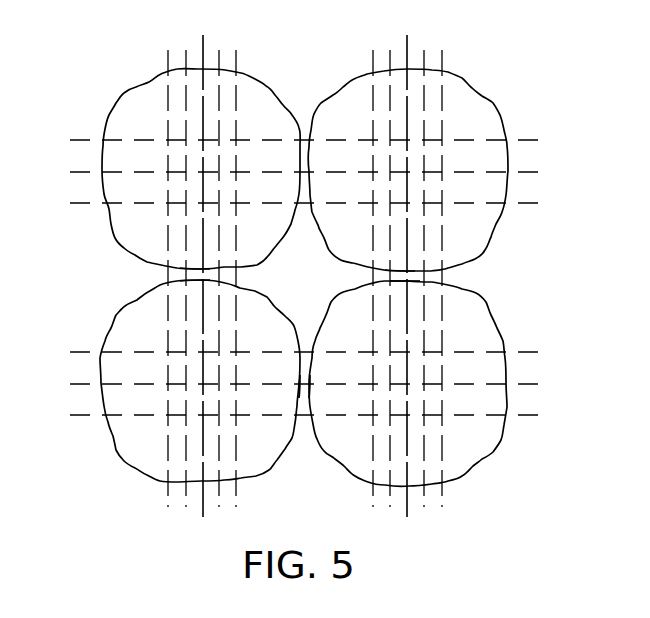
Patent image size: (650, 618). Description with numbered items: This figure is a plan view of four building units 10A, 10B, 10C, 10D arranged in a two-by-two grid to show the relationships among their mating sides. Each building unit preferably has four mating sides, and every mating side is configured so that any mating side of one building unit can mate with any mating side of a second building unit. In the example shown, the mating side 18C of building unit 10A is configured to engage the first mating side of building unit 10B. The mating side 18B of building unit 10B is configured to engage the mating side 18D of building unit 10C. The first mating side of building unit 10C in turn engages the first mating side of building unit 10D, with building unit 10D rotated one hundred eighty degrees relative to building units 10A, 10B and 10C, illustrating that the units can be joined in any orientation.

The building unit 10A is at (158, 126).
The building unit 10B is at (160, 338).
The building unit 10C is at (488, 346).
The building unit 10D is at (490, 130).
The second mating side 18B is at (300, 393).
The third mating side 18C is at (194, 272).
The fourth mating side 18D is at (315, 393).